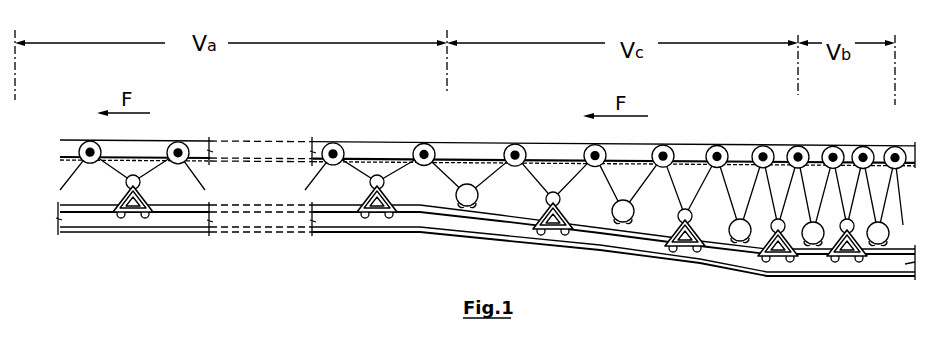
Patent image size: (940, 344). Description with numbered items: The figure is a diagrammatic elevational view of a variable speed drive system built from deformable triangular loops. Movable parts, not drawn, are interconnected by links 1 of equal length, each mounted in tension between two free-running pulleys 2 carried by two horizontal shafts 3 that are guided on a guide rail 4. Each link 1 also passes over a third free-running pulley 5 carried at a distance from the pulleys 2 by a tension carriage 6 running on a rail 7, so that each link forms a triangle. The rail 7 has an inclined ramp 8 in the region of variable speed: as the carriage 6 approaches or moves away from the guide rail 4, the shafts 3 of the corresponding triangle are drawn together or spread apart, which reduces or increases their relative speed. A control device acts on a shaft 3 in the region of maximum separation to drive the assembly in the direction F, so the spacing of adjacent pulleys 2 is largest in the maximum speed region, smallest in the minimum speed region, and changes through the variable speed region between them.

The link 1 is at (162, 190).
The free-running pulley 2 is at (88, 141).
The horizontal shaft 3 is at (333, 142).
The guide rail 4 is at (201, 145).
The third free-running pulley 5 is at (615, 220).
The tension carriage 6 is at (538, 215).
The rail 7 is at (415, 208).
The inclined ramp 8 is at (332, 208).